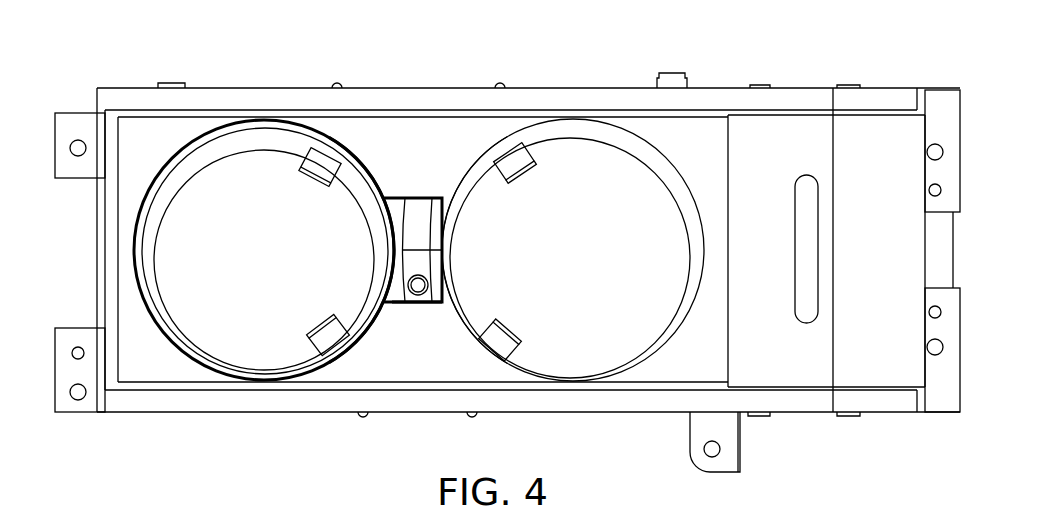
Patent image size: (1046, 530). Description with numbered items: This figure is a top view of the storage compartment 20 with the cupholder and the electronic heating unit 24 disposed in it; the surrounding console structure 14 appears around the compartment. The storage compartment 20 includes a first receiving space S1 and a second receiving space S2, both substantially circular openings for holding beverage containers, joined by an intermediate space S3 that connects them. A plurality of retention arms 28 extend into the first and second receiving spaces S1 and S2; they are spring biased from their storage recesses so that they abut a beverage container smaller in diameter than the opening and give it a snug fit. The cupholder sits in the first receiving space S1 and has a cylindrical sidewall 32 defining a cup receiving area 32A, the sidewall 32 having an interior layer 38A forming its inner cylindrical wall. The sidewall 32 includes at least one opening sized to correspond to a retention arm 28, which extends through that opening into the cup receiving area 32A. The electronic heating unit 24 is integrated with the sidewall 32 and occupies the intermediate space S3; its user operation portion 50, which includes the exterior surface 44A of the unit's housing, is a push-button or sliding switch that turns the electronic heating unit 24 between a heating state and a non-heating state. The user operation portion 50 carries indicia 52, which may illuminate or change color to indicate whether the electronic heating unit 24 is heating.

The cup holder assembly 14 is at (247, 52).
The storage compartment 20 is at (611, 47).
The electronic heating unit 24 is at (417, 302).
The retention arm 28 is at (318, 165).
The sidewall 32 is at (215, 125).
The cup receiving area 32A is at (187, 255).
The interior layer 38A is at (287, 145).
The exterior surface 44A is at (418, 263).
The user operation portion 50 is at (430, 287).
The indicia 52 is at (410, 279).
The first receiving space S1 is at (371, 155).
The second receiving space S2 is at (463, 157).
The intermediate space S3 is at (419, 197).